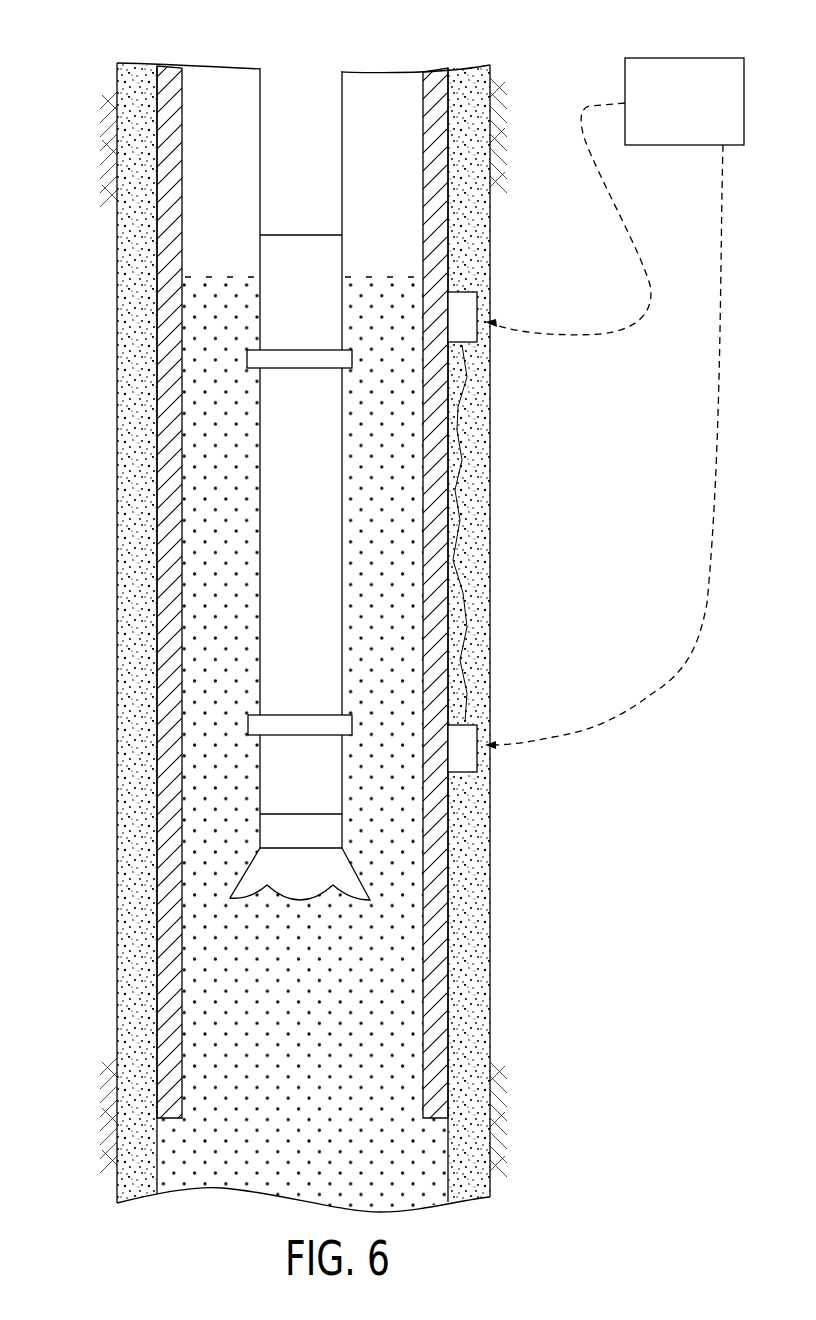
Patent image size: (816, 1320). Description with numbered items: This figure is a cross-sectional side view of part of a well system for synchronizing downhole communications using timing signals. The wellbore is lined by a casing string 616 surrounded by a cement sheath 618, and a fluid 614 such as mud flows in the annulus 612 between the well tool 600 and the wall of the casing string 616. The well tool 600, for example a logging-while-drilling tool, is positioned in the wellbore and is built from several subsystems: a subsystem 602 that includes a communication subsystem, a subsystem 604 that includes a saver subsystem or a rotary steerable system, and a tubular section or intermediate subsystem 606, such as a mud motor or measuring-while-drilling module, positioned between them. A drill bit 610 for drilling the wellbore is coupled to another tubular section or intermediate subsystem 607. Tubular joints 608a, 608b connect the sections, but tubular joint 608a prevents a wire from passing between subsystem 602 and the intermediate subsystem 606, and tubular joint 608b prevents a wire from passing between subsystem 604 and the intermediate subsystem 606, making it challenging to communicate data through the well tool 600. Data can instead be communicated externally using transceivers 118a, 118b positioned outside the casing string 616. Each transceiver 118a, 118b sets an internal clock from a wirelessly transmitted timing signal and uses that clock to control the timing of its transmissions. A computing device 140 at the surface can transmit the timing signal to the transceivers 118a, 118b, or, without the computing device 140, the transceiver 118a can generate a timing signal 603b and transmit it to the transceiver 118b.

The well tool 600 is at (247, 127).
The subsystem 602 is at (317, 248).
The subsystem 604 is at (278, 768).
The intermediate subsystem 606 is at (278, 422).
The intermediate subsystem 607 is at (278, 827).
The tubular joint 608a is at (298, 348).
The tubular joint 608b is at (307, 713).
The drill bit 610 is at (367, 900).
The annulus 612 is at (192, 232).
The fluid 614 is at (412, 1012).
The casing string 616 is at (165, 550).
The cement sheath 618 is at (138, 682).
The timing signal 603b is at (463, 583).
The transceiver 118a is at (478, 297).
The transceiver 118b is at (478, 756).
The computing device 140 is at (625, 70).